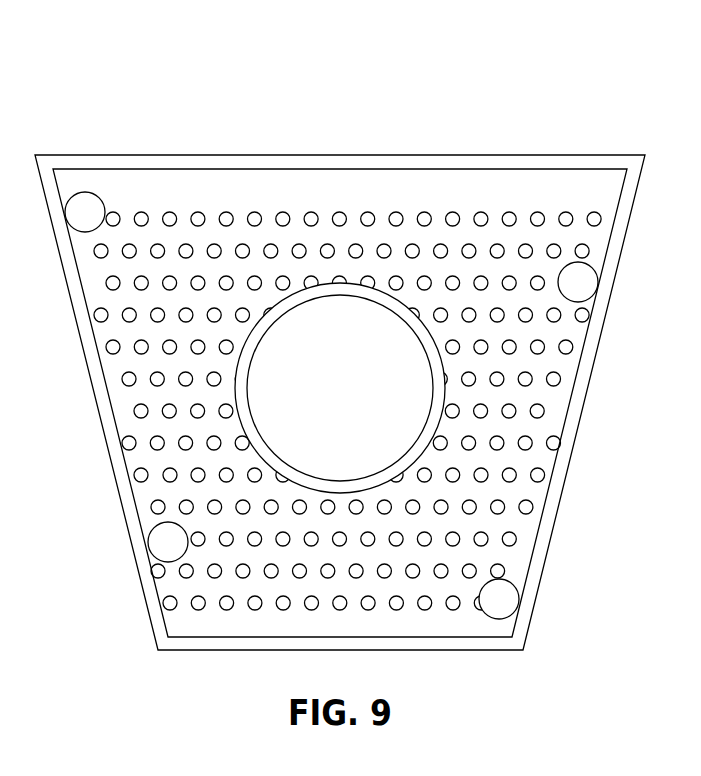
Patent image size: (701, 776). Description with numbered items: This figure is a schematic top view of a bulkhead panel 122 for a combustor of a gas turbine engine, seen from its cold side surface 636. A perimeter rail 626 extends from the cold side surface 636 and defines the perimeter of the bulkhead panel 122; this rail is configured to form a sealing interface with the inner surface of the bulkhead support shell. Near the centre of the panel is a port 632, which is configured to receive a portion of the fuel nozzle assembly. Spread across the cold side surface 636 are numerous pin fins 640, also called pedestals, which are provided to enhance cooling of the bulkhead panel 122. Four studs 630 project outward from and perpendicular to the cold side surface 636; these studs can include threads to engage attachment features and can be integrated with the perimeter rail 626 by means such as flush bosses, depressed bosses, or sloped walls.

The bulkhead panel 122 is at (333, 360).
The perimeter rail 626 is at (577, 413).
The studs 630 is at (77, 213).
The port 632 is at (265, 443).
The cold side surface 636 is at (339, 364).
The pin fins 640 is at (172, 474).